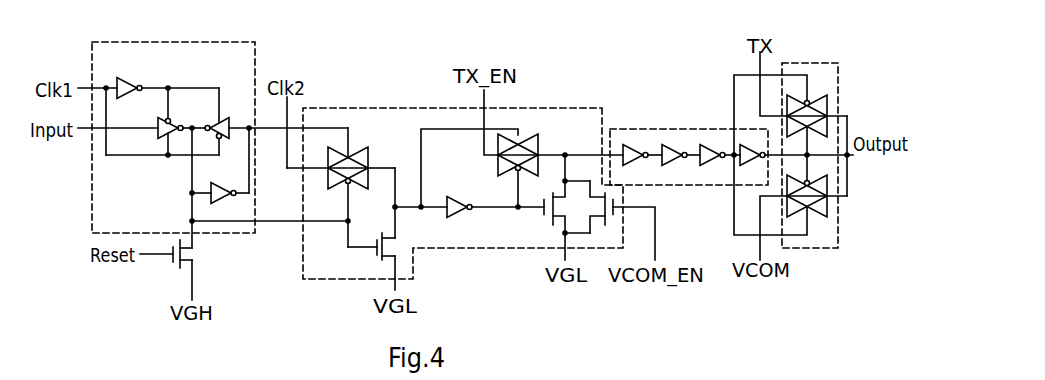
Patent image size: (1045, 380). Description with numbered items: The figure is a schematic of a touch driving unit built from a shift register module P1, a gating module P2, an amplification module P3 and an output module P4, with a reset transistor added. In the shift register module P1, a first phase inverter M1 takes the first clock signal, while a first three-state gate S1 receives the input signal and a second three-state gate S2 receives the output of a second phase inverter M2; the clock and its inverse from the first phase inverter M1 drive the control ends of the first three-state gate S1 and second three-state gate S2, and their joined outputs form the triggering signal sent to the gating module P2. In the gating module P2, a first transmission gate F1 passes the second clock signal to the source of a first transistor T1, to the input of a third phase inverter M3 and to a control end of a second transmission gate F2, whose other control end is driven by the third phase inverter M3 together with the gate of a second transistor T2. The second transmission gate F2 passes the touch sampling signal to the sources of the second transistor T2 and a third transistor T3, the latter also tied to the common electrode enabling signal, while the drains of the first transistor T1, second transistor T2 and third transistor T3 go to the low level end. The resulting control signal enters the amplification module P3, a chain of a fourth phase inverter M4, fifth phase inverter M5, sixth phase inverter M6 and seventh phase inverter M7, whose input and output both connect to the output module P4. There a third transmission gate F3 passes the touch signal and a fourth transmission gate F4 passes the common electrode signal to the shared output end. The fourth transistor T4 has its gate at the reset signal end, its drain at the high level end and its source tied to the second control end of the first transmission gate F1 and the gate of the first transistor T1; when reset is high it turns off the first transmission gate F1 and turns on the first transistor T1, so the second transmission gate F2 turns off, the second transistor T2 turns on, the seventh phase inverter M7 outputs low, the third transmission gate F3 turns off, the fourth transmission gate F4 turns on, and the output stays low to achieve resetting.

The shift register module P1 is at (216, 41).
The gating module P2 is at (367, 107).
The amplification module P3 is at (652, 128).
The output module P4 is at (805, 62).
The first phase inverter M1 is at (168, 80).
The second phase inverter M2 is at (221, 203).
The third phase inverter M3 is at (495, 219).
The fourth phase inverter M4 is at (638, 166).
The fifth phase inverter M5 is at (677, 166).
The sixth phase inverter M6 is at (716, 166).
The seventh phase inverter M7 is at (795, 166).
The first three-state gate S1 is at (170, 133).
The second three-state gate S2 is at (276, 123).
The first transistor T1 is at (371, 261).
The second transistor T2 is at (563, 213).
The third transistor T3 is at (622, 220).
The fourth transistor T4 is at (166, 270).
The first transmission gate F1 is at (338, 187).
The second transmission gate F2 is at (511, 170).
The third transmission gate F3 is at (814, 128).
The fourth transmission gate F4 is at (814, 206).